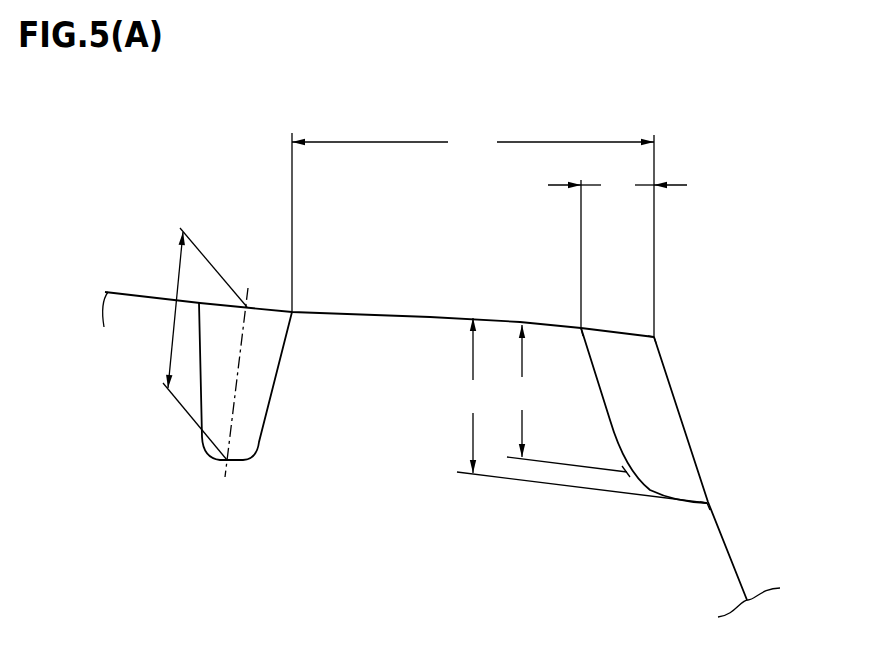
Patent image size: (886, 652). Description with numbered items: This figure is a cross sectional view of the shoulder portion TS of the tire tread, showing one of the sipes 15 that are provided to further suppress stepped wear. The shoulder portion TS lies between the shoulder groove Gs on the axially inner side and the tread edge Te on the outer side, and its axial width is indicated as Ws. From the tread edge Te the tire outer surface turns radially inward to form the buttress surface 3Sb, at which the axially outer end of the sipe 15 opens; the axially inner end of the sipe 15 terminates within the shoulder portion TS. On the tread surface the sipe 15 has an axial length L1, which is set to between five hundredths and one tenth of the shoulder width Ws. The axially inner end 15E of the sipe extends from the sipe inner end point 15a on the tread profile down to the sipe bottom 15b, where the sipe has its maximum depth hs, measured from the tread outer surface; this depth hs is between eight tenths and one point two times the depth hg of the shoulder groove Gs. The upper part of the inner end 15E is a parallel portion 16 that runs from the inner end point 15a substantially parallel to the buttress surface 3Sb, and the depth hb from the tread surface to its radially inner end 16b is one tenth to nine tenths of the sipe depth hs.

The shoulder portion TS is at (358, 313).
The shoulder groove Gs is at (265, 425).
The depth of the shoulder groove hg is at (178, 283).
The width of the shoulder portion Ws is at (473, 235).
The length of the sipe L1 is at (617, 251).
The sipe inner end point 15a is at (581, 327).
The tread edge Te is at (667, 331).
The inner end of the sipe 15E is at (610, 420).
The parallel portion 16 is at (707, 415).
The buttress surface 3Sb is at (688, 445).
The sipe 15 is at (744, 477).
The depth of the sipe hs is at (580, 410).
The depth of the parallel portion hb is at (564, 398).
The radially inner end of the parallel portion 16b is at (626, 473).
The sipe bottom 15b is at (677, 497).